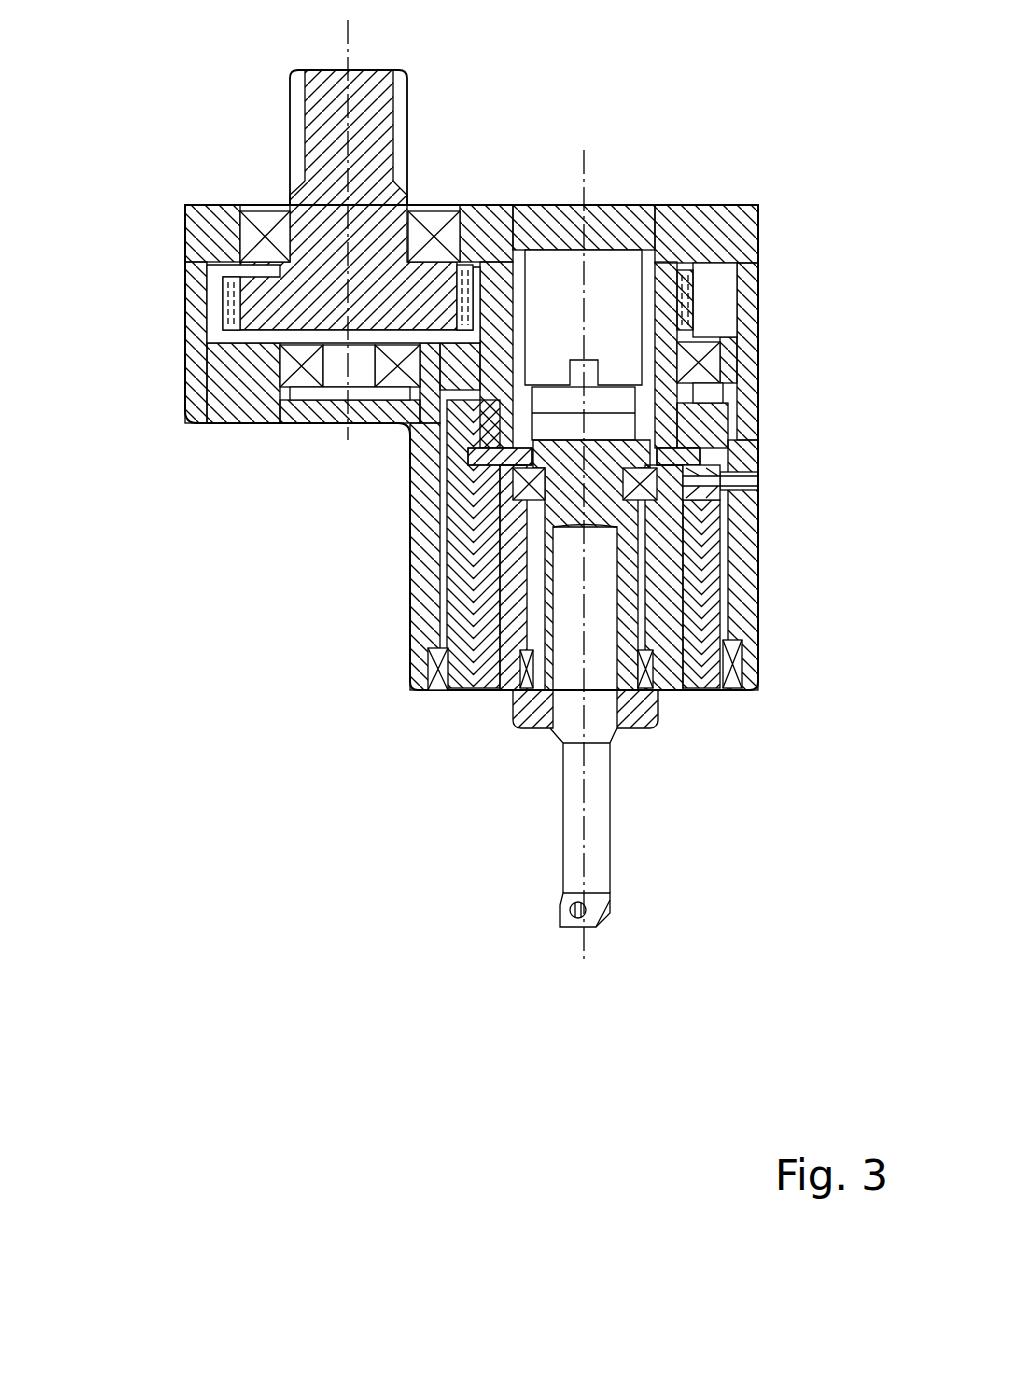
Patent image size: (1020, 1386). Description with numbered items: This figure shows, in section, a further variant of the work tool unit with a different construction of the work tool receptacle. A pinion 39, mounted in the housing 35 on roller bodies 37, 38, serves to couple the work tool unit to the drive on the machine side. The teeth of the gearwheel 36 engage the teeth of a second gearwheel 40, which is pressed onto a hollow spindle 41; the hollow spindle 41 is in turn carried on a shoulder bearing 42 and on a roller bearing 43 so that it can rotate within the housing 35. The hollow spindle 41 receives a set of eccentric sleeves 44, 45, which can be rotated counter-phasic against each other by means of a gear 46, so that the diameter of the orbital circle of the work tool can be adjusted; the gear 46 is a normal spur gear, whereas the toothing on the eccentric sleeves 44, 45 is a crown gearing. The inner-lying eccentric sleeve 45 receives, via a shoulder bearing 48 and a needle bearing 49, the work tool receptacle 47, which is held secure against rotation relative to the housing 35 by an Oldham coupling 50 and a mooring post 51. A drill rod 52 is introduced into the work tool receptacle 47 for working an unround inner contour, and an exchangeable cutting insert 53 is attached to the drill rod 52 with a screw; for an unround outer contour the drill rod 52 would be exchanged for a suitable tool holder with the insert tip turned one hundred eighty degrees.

The housing 35 is at (703, 230).
The gearwheel 36 is at (260, 306).
The roller body 37 is at (248, 240).
The roller body 38 is at (288, 371).
The pinion 39 is at (323, 139).
The second gearwheel 40 is at (690, 299).
The hollow spindle 41 is at (706, 535).
The shoulder bearing 42 is at (693, 352).
The roller bearing 43 is at (437, 650).
The eccentric sleeve 44 is at (484, 569).
The inner-lying eccentric sleeve 45 is at (662, 603).
The gear 46 is at (712, 481).
The work tool receptacle 47 is at (540, 710).
The shoulder bearing 48 is at (520, 485).
The needle bearing 49 is at (645, 658).
The Oldham coupling 50 is at (608, 405).
The mooring post 51 is at (612, 268).
The drill rod 52 is at (596, 828).
The cutting insert 53 is at (558, 924).